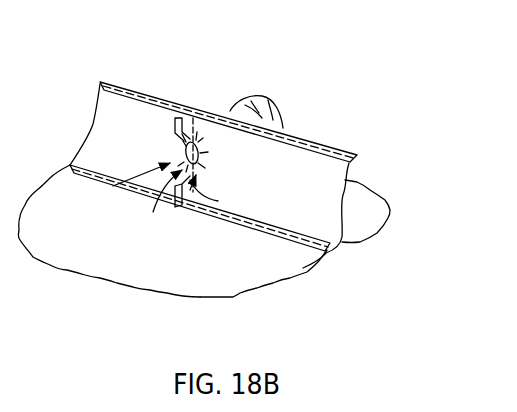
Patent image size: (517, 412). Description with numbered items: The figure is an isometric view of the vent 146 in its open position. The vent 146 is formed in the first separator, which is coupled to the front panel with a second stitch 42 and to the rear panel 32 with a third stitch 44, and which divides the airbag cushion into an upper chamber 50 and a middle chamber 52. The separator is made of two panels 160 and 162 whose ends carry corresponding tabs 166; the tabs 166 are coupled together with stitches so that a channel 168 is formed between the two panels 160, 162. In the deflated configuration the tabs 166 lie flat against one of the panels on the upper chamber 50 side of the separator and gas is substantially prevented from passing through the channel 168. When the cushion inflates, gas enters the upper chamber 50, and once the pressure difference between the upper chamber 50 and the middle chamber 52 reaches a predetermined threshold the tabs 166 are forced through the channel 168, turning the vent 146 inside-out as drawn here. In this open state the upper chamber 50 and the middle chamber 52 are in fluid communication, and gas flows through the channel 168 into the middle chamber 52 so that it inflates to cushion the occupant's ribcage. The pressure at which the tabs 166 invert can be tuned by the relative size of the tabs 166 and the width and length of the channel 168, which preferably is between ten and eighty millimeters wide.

The rear panel 32 is at (302, 266).
The second stitch 42 is at (124, 85).
The third stitch 44 is at (242, 226).
The upper chamber 50 is at (75, 218).
The middle chamber 52 is at (375, 166).
The vent 146 is at (258, 76).
The panel 160 is at (133, 156).
The panel 162 is at (317, 213).
The tabs 166 is at (270, 121).
The channel 168 is at (198, 159).